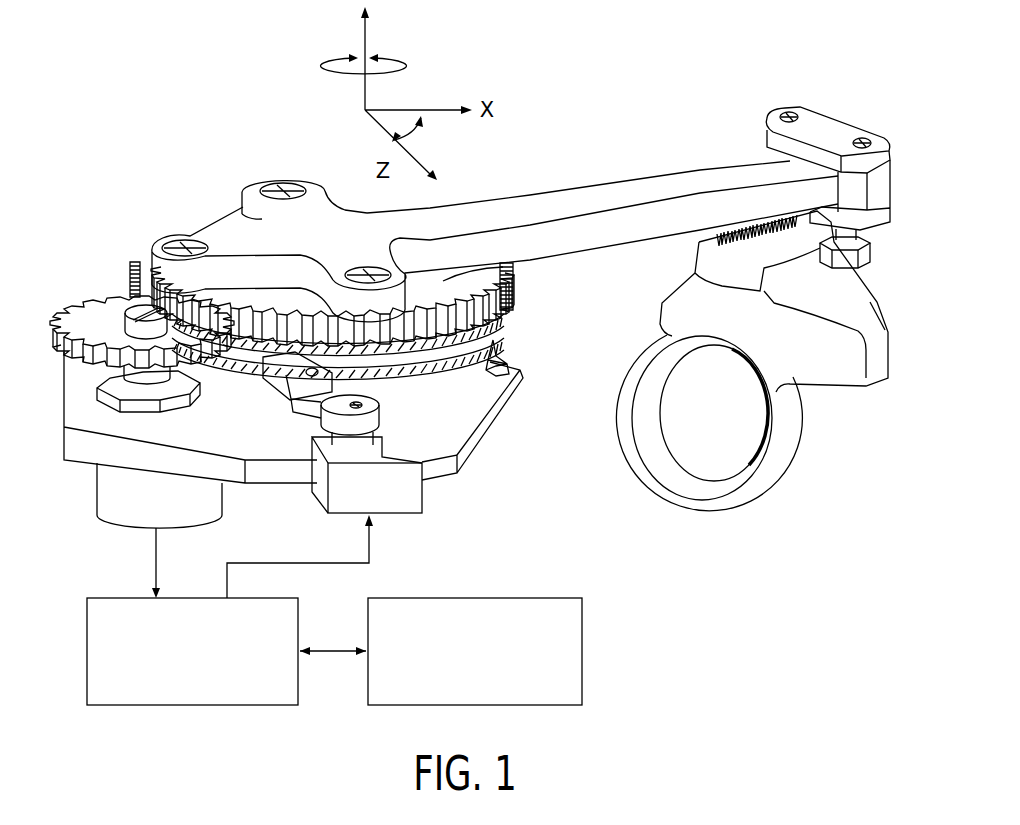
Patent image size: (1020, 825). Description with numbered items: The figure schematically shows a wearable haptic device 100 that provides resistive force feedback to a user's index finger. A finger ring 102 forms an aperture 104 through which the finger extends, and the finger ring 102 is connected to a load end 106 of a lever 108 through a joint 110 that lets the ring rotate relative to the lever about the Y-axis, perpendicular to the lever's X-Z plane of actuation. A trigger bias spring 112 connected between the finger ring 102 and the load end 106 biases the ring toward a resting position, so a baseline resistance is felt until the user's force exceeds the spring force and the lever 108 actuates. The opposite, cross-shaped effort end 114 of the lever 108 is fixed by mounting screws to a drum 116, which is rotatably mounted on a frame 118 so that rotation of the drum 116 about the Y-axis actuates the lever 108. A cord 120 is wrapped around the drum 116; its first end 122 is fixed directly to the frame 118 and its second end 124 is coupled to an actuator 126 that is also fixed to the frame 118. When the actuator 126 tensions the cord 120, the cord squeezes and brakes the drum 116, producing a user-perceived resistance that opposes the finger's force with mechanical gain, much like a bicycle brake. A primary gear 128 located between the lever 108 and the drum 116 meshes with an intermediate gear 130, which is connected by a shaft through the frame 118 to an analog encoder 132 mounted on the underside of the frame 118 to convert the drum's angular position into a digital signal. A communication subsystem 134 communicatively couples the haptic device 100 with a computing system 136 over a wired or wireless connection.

The haptic device 100 is at (186, 76).
The finger ring 102 is at (782, 443).
The aperture 104 is at (683, 441).
The load end 106 is at (875, 182).
The lever 108 is at (607, 200).
The joint 110 is at (847, 245).
The trigger bias spring 112 is at (716, 240).
The effort end 114 is at (303, 238).
The drum 116 is at (388, 380).
The frame 118 is at (495, 410).
The cord 120 is at (447, 367).
The first end 122 is at (514, 350).
The second end 124 is at (282, 380).
The actuator 126 is at (407, 487).
The primary gear 128 is at (500, 273).
The intermediate gear 130 is at (98, 322).
The analog encoder 132 is at (97, 480).
The communication subsystem 134 is at (192, 651).
The computing system 136 is at (475, 651).